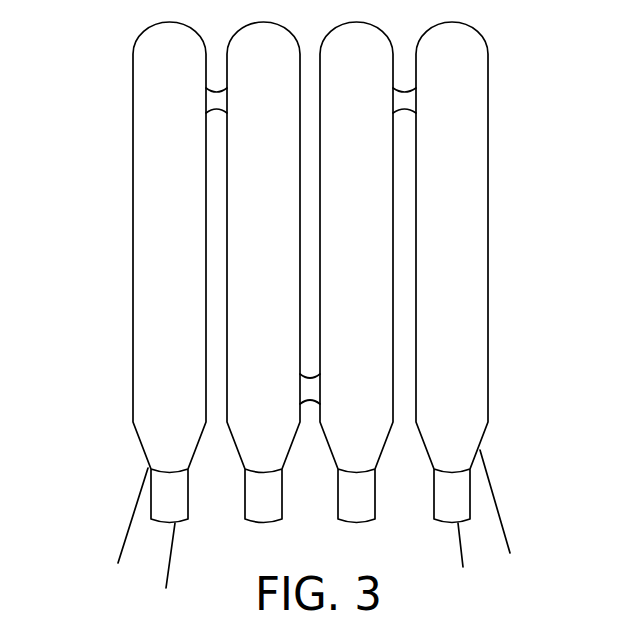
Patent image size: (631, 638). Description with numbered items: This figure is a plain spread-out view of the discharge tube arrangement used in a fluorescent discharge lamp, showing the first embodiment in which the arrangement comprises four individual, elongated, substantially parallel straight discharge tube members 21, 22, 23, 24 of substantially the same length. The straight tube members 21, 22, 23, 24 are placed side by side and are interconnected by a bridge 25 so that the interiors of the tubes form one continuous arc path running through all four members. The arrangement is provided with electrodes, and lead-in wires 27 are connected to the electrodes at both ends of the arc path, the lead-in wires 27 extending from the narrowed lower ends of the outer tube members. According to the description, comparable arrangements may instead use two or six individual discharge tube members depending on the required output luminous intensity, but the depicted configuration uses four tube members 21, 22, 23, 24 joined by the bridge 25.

The straight discharge tube member 21 is at (157, 184).
The straight discharge tube member 22 is at (258, 283).
The straight discharge tube member 23 is at (453, 166).
The straight discharge tube member 24 is at (349, 273).
The bridge 25 is at (218, 97).
The lead-in wires 27 is at (130, 517).